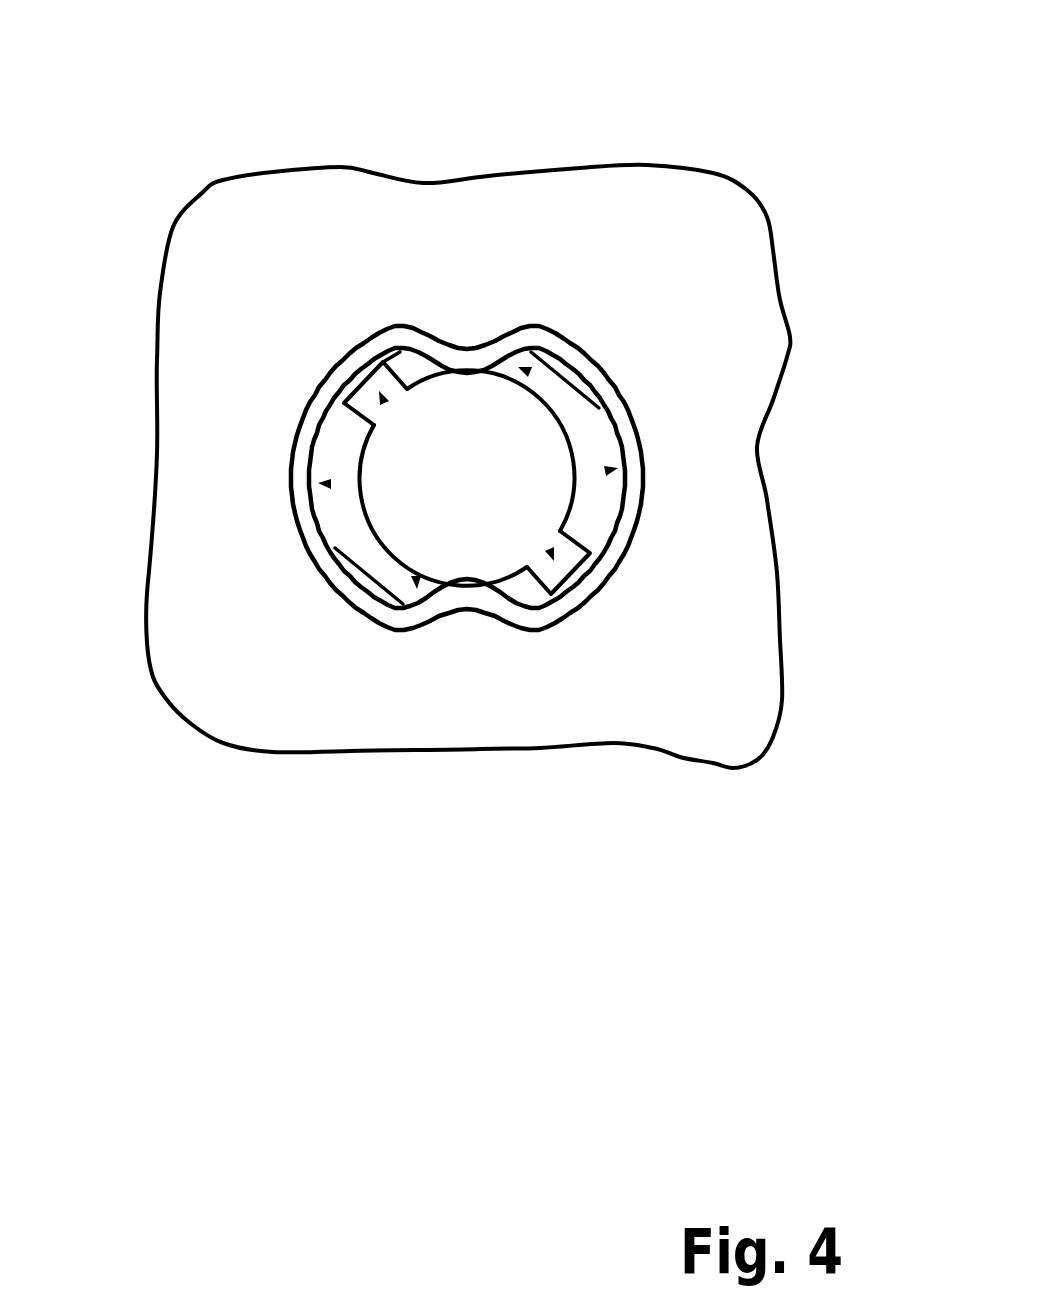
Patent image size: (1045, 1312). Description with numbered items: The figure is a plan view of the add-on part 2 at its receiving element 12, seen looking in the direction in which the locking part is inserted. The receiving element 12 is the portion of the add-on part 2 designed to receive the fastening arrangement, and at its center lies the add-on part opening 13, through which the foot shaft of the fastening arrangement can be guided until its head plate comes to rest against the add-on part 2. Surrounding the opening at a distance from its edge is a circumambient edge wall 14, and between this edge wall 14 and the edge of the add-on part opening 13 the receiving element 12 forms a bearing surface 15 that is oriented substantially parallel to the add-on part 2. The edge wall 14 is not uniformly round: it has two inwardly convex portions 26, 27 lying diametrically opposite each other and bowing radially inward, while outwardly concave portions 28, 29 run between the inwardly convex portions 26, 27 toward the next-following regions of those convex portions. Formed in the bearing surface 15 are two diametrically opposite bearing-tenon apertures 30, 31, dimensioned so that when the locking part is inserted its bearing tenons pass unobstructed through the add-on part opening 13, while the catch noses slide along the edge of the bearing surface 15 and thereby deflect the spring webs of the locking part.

The add-on part 2 is at (697, 272).
The receiving element 12 is at (372, 310).
The add-on part opening 13 is at (481, 498).
The edge wall 14 is at (612, 408).
The bearing surface 15 is at (355, 538).
The inwardly convex portion 26 is at (522, 369).
The inwardly convex portion 27 is at (417, 582).
The outwardly concave portion 28 is at (324, 484).
The outwardly concave portion 29 is at (612, 469).
The bearing-tenon aperture 30 is at (385, 402).
The bearing-tenon aperture 31 is at (551, 553).